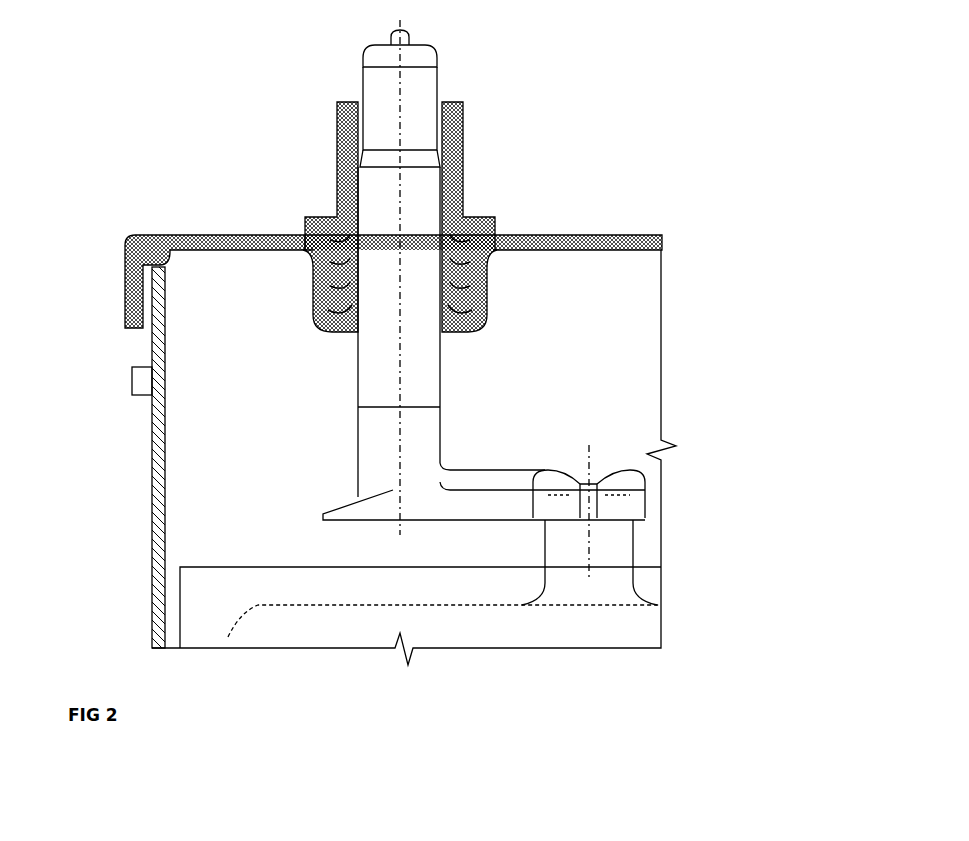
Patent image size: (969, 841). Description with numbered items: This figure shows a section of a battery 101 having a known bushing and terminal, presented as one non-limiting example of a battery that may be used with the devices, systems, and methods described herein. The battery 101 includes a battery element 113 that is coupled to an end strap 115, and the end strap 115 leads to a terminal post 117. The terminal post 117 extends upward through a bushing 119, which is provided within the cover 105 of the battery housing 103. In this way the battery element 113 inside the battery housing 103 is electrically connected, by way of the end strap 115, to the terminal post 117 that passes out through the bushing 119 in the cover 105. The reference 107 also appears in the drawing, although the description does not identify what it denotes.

The battery 101 is at (801, 129).
The battery housing 103 is at (152, 452).
The cover 105 is at (212, 230).
The stem 107 is at (500, 80).
The battery element 113 is at (633, 547).
The end strap 115 is at (640, 483).
The terminal post 117 is at (448, 378).
The bushing 119 is at (462, 193).